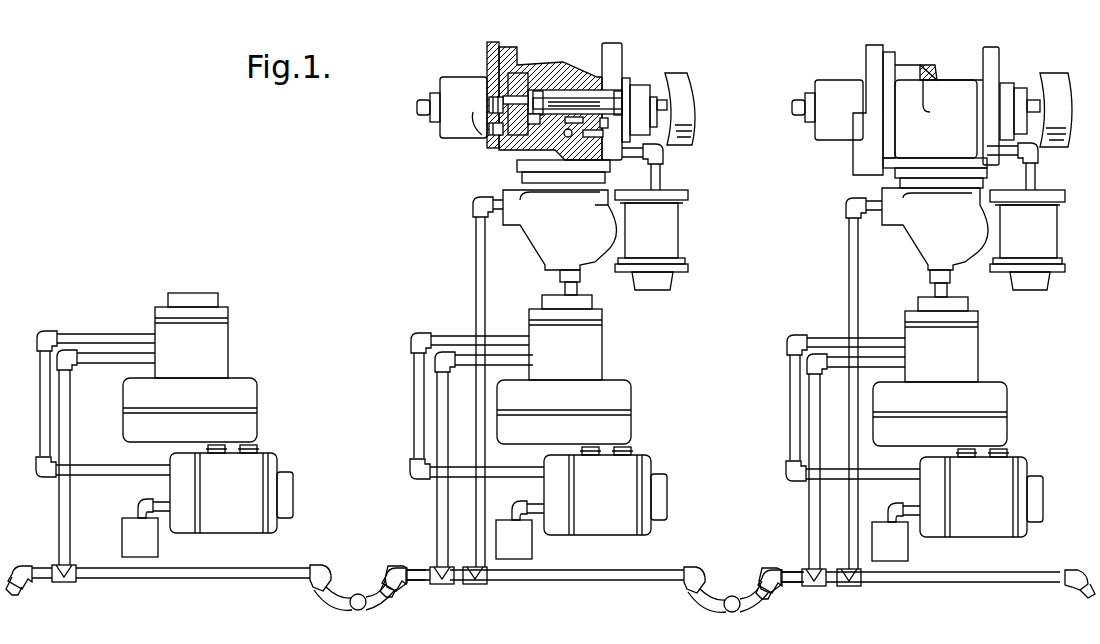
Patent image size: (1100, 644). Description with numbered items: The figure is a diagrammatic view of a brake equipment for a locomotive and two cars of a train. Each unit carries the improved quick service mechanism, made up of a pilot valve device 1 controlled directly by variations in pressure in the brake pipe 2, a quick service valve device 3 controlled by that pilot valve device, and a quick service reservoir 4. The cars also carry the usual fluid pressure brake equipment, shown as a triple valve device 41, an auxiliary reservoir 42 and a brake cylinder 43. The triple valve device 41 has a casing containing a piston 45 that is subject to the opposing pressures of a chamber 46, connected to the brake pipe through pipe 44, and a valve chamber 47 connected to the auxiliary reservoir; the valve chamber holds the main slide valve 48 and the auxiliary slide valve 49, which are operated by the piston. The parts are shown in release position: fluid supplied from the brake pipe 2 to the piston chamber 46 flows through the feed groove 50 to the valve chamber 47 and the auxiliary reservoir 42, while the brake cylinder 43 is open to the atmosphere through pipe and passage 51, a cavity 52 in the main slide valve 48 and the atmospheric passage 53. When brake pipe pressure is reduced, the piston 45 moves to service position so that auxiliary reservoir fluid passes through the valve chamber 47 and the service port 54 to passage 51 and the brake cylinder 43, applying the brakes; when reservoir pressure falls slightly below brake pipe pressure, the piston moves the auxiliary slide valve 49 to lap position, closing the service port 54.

The pilot valve device 1 is at (155, 307).
The brake pipe 2 is at (73, 408).
The quick service valve device 3 is at (170, 457).
The quick service reservoir 4 is at (122, 538).
The triple valve device 41 is at (566, 80).
The auxiliary reservoir 42 is at (682, 85).
The brake cylinder 43 is at (688, 197).
The pipe 44 is at (476, 276).
The piston 45 is at (506, 125).
The chamber 46 is at (476, 113).
The valve chamber 47 is at (617, 85).
The main slide valve 48 is at (514, 148).
The auxiliary slide valve 49 is at (527, 147).
The feed groove 50 is at (520, 73).
The pipe and passage 51 is at (660, 175).
The cavity 52 is at (571, 100).
The atmospheric passage 53 is at (568, 140).
The service port 54 is at (594, 100).